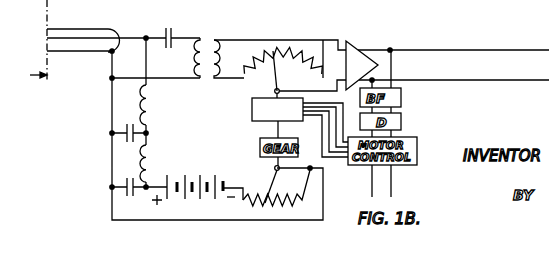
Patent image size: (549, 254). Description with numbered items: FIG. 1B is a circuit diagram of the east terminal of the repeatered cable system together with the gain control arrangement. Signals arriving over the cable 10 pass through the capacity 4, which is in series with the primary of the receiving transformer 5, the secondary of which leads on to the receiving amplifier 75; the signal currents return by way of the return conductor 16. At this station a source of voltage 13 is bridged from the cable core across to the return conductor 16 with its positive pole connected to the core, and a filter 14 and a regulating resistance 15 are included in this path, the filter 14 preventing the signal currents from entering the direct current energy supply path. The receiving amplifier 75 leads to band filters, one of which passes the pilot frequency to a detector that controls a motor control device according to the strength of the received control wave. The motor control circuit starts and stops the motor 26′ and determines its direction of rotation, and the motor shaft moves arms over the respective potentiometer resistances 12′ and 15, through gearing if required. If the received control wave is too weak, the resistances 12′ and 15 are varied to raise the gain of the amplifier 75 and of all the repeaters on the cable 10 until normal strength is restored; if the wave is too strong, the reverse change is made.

The cable 10 is at (103, 26).
The return conductor 16 is at (108, 54).
The capacity 4 is at (168, 29).
The receiving transformer 5 is at (208, 40).
The filter 14 is at (152, 108).
The potentiometer resistance 12′ is at (295, 66).
The motor 26′ is at (252, 106).
The receiving amplifier 75 is at (353, 48).
The source of voltage 13 is at (192, 179).
The regulating resistance 15 is at (290, 196).